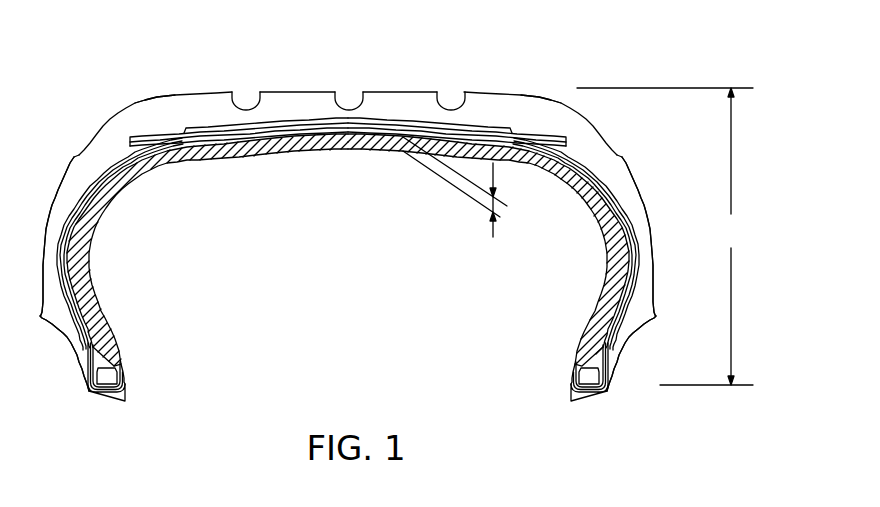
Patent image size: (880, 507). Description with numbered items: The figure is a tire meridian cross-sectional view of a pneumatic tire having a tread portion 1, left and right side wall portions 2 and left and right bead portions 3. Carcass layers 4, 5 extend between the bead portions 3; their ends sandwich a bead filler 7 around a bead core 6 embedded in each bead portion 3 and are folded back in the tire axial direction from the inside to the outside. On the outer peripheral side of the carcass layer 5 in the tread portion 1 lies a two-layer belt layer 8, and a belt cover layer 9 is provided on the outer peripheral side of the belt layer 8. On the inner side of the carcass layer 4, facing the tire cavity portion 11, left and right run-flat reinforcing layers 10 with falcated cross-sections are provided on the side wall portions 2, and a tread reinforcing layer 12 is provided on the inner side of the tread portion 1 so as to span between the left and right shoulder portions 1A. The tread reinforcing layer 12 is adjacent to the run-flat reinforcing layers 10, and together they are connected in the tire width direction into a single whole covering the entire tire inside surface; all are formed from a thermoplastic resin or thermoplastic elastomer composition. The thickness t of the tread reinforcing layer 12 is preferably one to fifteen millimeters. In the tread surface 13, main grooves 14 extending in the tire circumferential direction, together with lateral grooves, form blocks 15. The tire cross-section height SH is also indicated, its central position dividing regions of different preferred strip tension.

The tread portion 1 is at (500, 92).
The shoulder portion 1A is at (160, 99).
The side wall portion 2 is at (648, 240).
The bead portion 3 is at (613, 378).
The carcass layer 4 is at (603, 170).
The carcass layer 5 is at (613, 185).
The bead core 6 is at (588, 379).
The bead filler 7 is at (575, 355).
The belt layer 8 is at (355, 136).
The belt cover layer 9 is at (452, 127).
The run-flat reinforcing layer 10 is at (90, 243).
The tire cavity portion 11 is at (313, 262).
The tread reinforcing layer 12 is at (240, 158).
The tread surface 13 is at (307, 88).
The main groove 14 is at (350, 101).
The block 15 is at (407, 98).
The thickness of the tread reinforcing layer t is at (459, 187).
The tire cross-section height SH is at (665, 236).